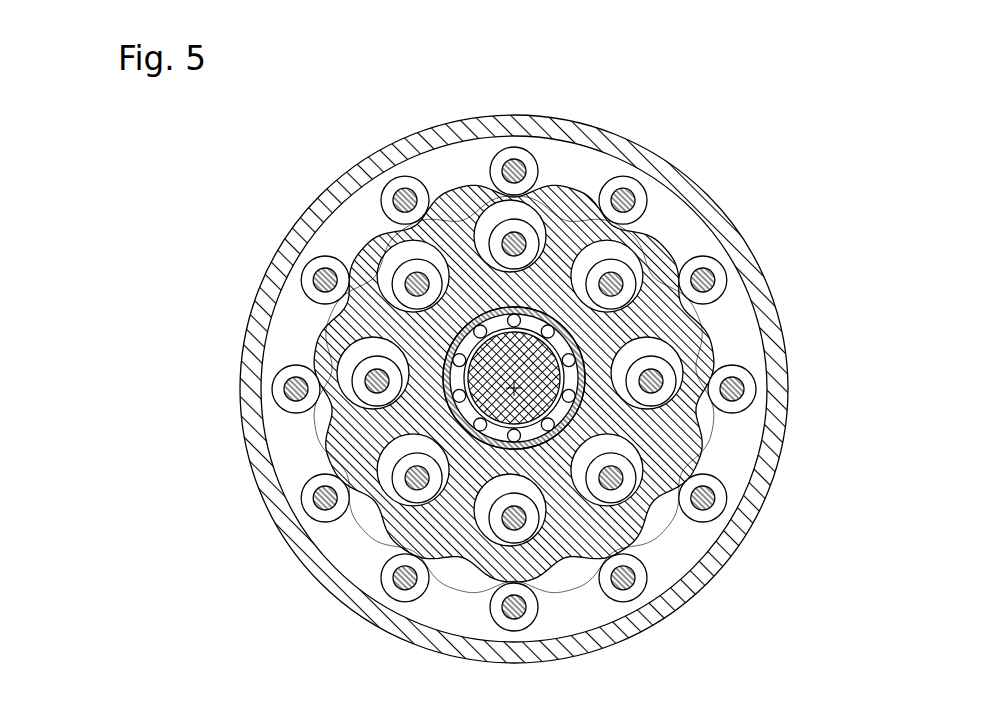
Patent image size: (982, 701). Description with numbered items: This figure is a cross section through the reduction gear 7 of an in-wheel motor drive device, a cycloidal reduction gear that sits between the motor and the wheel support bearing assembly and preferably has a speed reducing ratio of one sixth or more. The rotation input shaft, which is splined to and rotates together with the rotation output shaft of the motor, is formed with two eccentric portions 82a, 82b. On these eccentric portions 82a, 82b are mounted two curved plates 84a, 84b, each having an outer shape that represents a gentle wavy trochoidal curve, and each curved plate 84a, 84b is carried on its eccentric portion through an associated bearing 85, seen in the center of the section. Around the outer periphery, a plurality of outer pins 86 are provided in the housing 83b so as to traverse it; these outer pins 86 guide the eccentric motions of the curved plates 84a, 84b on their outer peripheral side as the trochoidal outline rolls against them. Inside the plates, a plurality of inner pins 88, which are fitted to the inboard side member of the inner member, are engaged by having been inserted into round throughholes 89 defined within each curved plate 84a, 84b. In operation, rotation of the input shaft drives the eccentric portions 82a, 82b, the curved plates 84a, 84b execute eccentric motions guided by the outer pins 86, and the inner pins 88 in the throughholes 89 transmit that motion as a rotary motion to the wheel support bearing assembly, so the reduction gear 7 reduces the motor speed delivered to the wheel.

The reduction gear 7 is at (326, 182).
The eccentric portion 82a is at (327, 467).
The eccentric portion 82b is at (460, 408).
The housing 83b is at (287, 247).
The curved plate 84a is at (743, 283).
The curved plate 84b is at (656, 238).
The bearing 85 is at (450, 340).
The outer pins 86 is at (508, 166).
The inner pins 88 is at (607, 279).
The round throughholes 89 is at (681, 361).